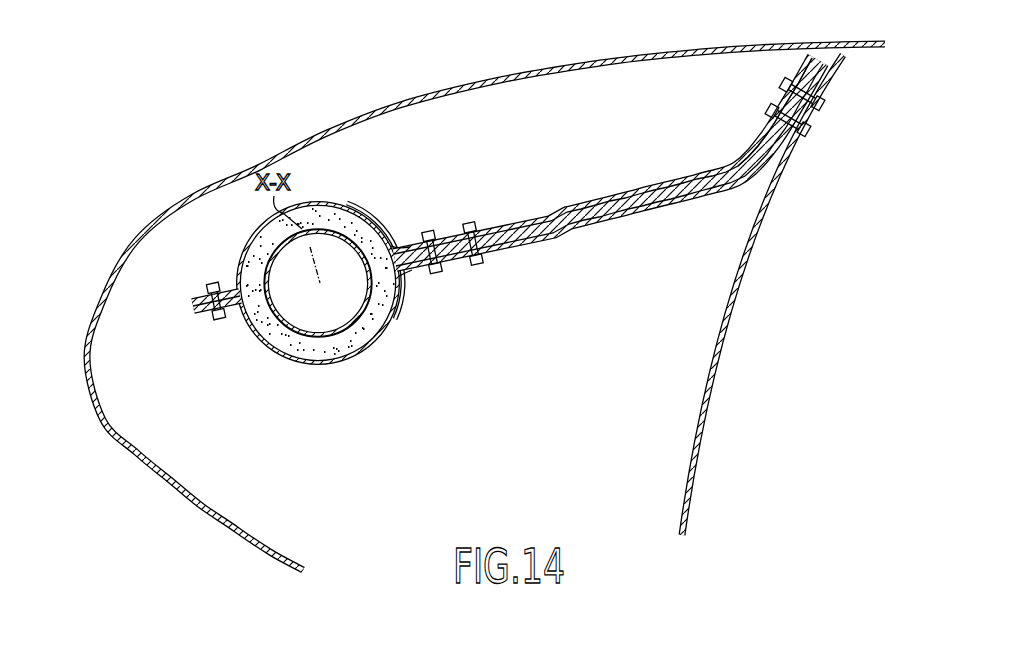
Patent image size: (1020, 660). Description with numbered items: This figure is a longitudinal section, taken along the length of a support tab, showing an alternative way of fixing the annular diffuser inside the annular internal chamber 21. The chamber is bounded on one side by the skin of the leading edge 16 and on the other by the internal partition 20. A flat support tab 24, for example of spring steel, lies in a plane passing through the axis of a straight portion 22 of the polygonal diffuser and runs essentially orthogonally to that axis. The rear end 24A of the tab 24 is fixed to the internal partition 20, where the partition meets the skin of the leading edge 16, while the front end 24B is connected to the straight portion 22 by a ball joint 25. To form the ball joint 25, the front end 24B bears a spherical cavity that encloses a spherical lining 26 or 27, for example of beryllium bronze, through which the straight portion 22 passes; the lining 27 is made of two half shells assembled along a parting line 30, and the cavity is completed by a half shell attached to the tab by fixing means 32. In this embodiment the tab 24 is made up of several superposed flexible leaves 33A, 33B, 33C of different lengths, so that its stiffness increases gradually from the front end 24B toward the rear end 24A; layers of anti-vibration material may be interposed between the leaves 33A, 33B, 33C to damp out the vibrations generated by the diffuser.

The leading edge 16 is at (105, 263).
The internal partition 20 is at (738, 300).
The annular internal chamber 21 is at (609, 424).
The straight portion 22 is at (297, 362).
The flat support tab 24 is at (617, 178).
The rear end 24A is at (812, 132).
The front end 24B is at (247, 338).
The ball joint 25 is at (373, 209).
The spherical lining 26 is at (352, 342).
The spherical lining 27 is at (318, 283).
The parting line 30 is at (406, 306).
The fixing means 32 is at (466, 222).
The flexible leaf 33A is at (660, 209).
The flexible leaf 33B is at (676, 180).
The flexible leaf 33C is at (585, 200).